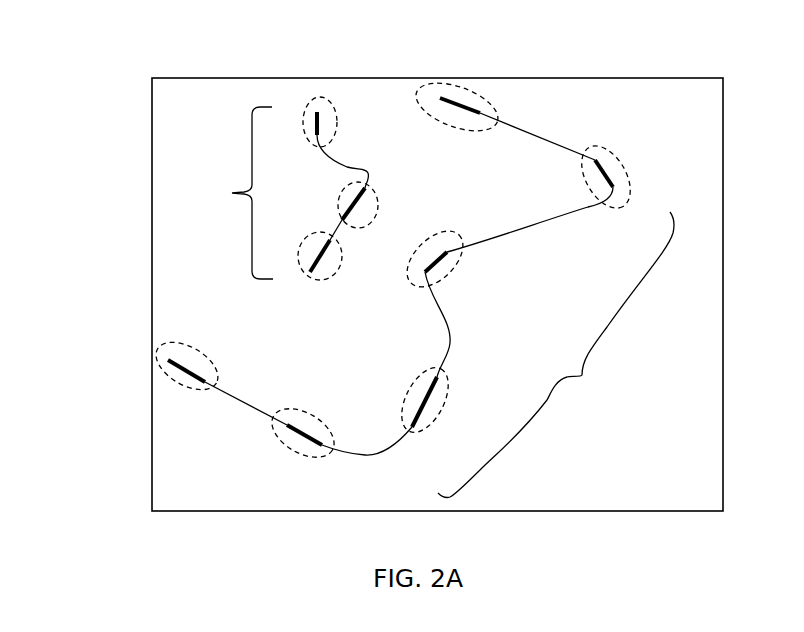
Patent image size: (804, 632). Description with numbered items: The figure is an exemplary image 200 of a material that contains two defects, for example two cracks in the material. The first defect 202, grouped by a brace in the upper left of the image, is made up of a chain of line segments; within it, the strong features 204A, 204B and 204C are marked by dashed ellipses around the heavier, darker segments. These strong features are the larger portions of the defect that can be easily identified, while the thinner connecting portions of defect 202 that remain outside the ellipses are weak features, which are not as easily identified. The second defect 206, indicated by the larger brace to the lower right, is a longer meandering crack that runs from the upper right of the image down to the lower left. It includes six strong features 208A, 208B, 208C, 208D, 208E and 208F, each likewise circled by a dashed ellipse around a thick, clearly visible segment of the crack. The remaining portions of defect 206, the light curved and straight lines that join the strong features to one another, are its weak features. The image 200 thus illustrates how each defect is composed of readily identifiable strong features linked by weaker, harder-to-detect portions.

The image 200 is at (141, 74).
The defect 202 is at (225, 193).
The strong feature 204A is at (338, 123).
The strong feature 204B is at (375, 190).
The strong feature 204C is at (315, 278).
The defect 206 is at (556, 355).
The strong feature 208A is at (500, 112).
The strong feature 208B is at (600, 147).
The strong feature 208C is at (443, 275).
The strong feature 208D is at (447, 378).
The strong feature 208E is at (278, 433).
The strong feature 208F is at (173, 373).